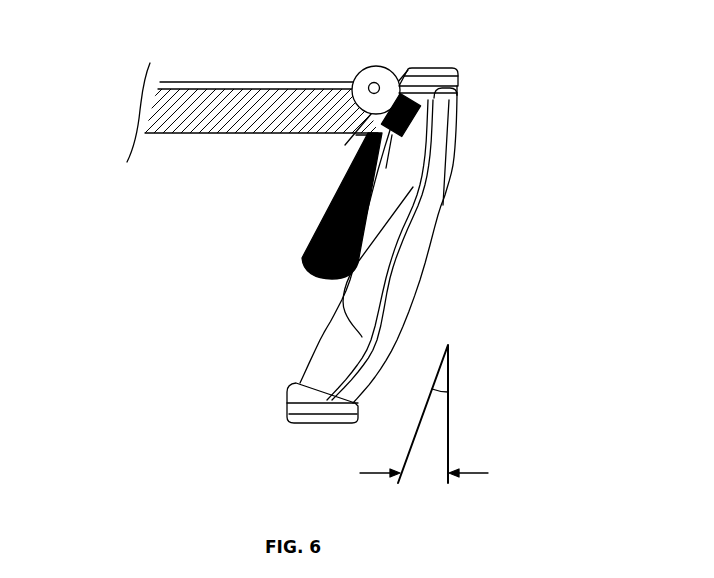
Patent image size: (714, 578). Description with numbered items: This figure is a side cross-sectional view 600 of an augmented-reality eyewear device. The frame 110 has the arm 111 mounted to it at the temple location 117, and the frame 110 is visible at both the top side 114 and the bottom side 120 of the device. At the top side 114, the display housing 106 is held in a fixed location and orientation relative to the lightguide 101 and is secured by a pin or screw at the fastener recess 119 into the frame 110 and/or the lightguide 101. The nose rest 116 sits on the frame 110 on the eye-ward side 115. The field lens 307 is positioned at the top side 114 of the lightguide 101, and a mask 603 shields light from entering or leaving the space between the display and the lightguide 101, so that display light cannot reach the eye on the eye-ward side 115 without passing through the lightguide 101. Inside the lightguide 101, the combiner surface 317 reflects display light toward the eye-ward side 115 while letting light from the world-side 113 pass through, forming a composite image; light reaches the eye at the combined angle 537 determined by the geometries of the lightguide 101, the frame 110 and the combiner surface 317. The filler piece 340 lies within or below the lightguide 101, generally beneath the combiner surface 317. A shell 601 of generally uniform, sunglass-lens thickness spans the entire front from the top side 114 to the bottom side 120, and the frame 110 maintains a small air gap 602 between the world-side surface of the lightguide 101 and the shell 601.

The side cross-sectional view 600 is at (94, 184).
The arm 111 is at (195, 82).
The display housing 106 is at (368, 66).
The fastener recess 119 is at (365, 65).
The frame 110 is at (440, 67).
The top side 114 is at (462, 48).
The temple location 117 is at (490, 93).
The mask 603 is at (423, 117).
The field lens 307 is at (360, 134).
The lightguide 101 is at (412, 188).
The shell 601 is at (445, 210).
The world-side 113 is at (497, 215).
The eye-ward side 115 is at (238, 217).
The nose rest 116 is at (312, 225).
The combiner surface 317 is at (380, 253).
The filler piece 340 is at (353, 288).
The air gap 602 is at (372, 330).
The bottom side 120 is at (278, 449).
The combined angle 537 is at (441, 415).